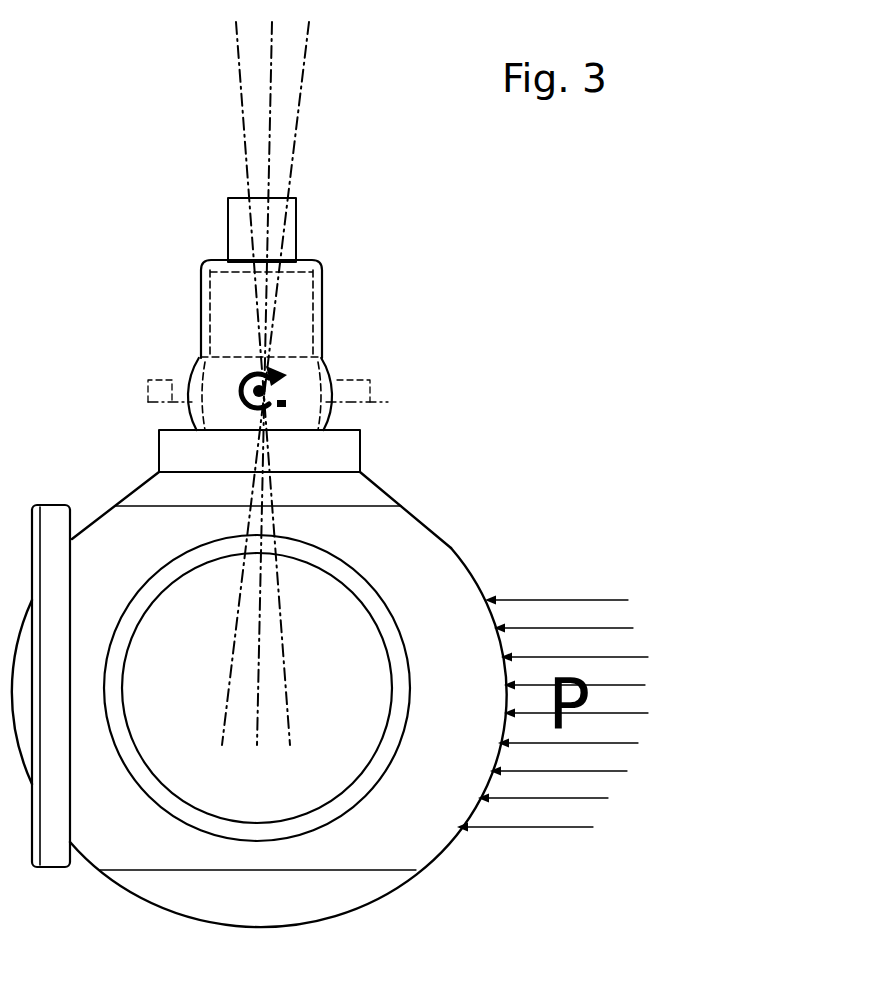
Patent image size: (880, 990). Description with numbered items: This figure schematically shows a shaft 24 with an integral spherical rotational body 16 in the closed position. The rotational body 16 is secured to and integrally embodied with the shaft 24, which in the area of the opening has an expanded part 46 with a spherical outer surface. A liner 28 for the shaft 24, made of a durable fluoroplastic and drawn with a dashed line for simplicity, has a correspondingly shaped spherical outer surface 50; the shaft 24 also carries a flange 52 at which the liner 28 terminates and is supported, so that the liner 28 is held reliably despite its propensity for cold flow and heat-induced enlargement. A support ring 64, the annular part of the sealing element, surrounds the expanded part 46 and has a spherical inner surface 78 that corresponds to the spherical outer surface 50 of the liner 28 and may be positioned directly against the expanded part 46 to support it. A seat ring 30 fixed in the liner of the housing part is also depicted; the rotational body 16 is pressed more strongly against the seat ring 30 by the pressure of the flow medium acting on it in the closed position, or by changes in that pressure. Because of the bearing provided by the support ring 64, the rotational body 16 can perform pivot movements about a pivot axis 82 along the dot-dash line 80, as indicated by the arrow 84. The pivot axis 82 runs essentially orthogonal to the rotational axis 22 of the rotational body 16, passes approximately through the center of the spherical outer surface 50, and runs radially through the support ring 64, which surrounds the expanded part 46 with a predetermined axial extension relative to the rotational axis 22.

The spherical rotational body 16 is at (430, 565).
The rotational axis 22 is at (270, 70).
The shaft 24 is at (288, 328).
The liner 28 is at (202, 320).
The seat ring 30 is at (52, 853).
The expanded part 46 is at (217, 378).
The spherical outer surface 50 is at (330, 376).
The flange 52 is at (208, 262).
The support ring 64 is at (410, 402).
The spherical inner surface 78 is at (315, 397).
The dot-dash line 80 is at (243, 110).
The pivot axis 82 is at (242, 397).
The arrow 84 is at (240, 386).